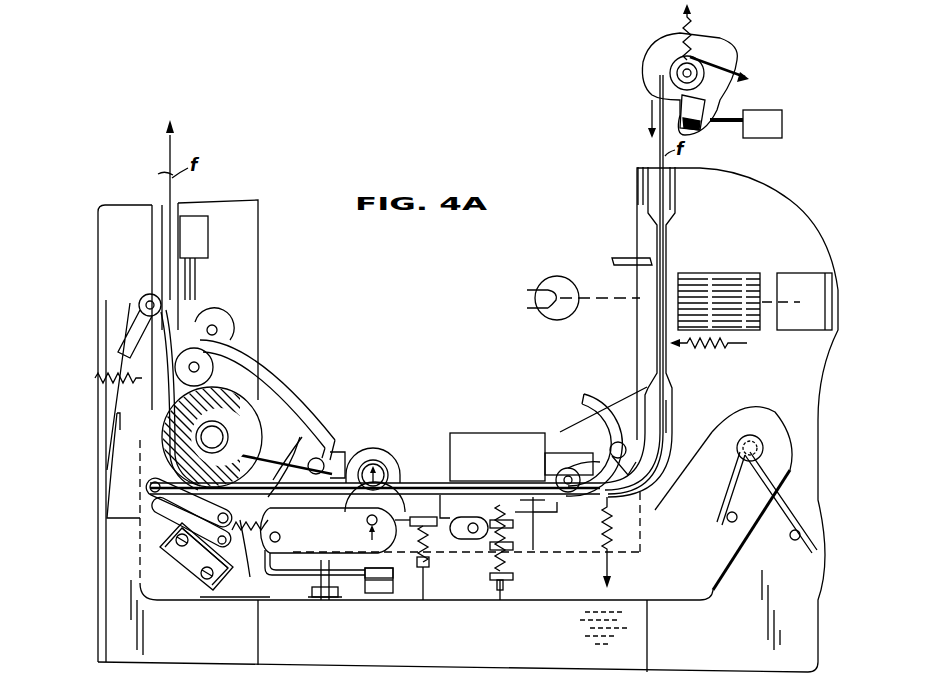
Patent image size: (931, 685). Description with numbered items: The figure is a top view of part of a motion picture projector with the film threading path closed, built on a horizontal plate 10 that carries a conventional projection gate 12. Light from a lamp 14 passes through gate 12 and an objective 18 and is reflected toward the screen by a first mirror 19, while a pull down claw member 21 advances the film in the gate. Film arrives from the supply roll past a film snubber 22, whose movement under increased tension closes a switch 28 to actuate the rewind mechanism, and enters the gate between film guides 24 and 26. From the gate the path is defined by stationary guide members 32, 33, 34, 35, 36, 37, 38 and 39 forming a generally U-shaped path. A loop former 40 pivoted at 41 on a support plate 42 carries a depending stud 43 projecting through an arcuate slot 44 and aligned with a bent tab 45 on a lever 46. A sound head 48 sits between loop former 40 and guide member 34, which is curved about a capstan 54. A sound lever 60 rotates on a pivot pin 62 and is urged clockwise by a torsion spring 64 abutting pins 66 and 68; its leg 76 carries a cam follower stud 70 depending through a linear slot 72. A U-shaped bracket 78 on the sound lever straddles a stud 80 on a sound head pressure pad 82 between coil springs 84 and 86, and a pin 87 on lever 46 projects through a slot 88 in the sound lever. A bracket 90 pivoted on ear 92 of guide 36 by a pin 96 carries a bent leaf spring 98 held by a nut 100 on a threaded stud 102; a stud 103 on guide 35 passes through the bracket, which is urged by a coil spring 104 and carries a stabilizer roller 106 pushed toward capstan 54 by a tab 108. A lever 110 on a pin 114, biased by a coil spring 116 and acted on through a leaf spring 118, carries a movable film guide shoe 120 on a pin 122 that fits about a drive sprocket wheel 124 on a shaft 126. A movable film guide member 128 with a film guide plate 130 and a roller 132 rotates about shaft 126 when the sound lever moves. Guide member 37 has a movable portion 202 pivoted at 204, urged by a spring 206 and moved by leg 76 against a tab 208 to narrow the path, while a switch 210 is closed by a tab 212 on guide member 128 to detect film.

The horizontal plate 10 is at (108, 608).
The projection gate 12 is at (677, 247).
The lamp 14 is at (553, 282).
The objective 18 is at (707, 275).
The first mirror 19 is at (790, 280).
The pull down claw member 21 is at (630, 256).
The film snubber 22 is at (667, 80).
The film guide 24 is at (640, 178).
The film guide 26 is at (676, 193).
The switch 28 is at (740, 102).
The stationary guide member 32 is at (630, 385).
The stationary guide member 33 is at (675, 395).
The guide member 34 is at (368, 452).
The film guide 35 is at (423, 500).
The film guide 36 is at (299, 437).
The guide member 37 is at (110, 462).
The stationary guide member 38 is at (152, 215).
The stationary guide member 39 is at (178, 210).
The loop former 40 is at (590, 390).
The pivot 41 is at (567, 477).
The support plate 42 is at (602, 450).
The depending stud 43 is at (677, 480).
The arcuate slot 44 is at (647, 450).
The bent tab 45 is at (675, 410).
The lever 46 is at (643, 533).
The sound head 48 is at (515, 443).
The capstan 54 is at (378, 463).
The sound lever 60 is at (713, 593).
The pivot pin 62 is at (752, 437).
The torsion spring 64 is at (780, 520).
The pin 66 is at (726, 515).
The pin 68 is at (793, 539).
The cam follower stud 70 is at (220, 330).
The linear slot 72 is at (217, 350).
The leg 76 is at (213, 320).
The U-shaped bracket 78 is at (490, 550).
The stud 80 is at (503, 585).
The sound head pressure pad 82 is at (547, 514).
The coil spring 84 is at (520, 520).
The coil spring 86 is at (527, 523).
The pin 87 is at (470, 517).
The slot 88 is at (477, 523).
The bracket 90 is at (355, 543).
The ear 92 is at (250, 577).
The pin 96 is at (277, 547).
The bent leaf spring 98 is at (393, 597).
The nut 100 is at (300, 593).
The threaded stud 102 is at (323, 597).
The stud 103 is at (403, 550).
The coil spring 104 is at (427, 580).
The stabilizer roller 106 is at (410, 497).
The tab 108 is at (383, 585).
The lever 110 is at (157, 518).
The pin 114 is at (160, 523).
The coil spring 116 is at (230, 595).
The leaf spring 118 is at (200, 553).
The movable film guide shoe 120 is at (153, 480).
The pin 122 is at (160, 505).
The drive sprocket wheel 124 is at (195, 400).
The shaft 126 is at (198, 437).
The movable film guide member 128 is at (268, 497).
The film guide plate 130 is at (272, 380).
The roller 132 is at (205, 362).
The movable portion 202 is at (125, 348).
The pivot 204 is at (140, 305).
The spring 206 is at (92, 378).
The tab 208 is at (170, 294).
The switch 210 is at (208, 240).
The tab 212 is at (327, 457).